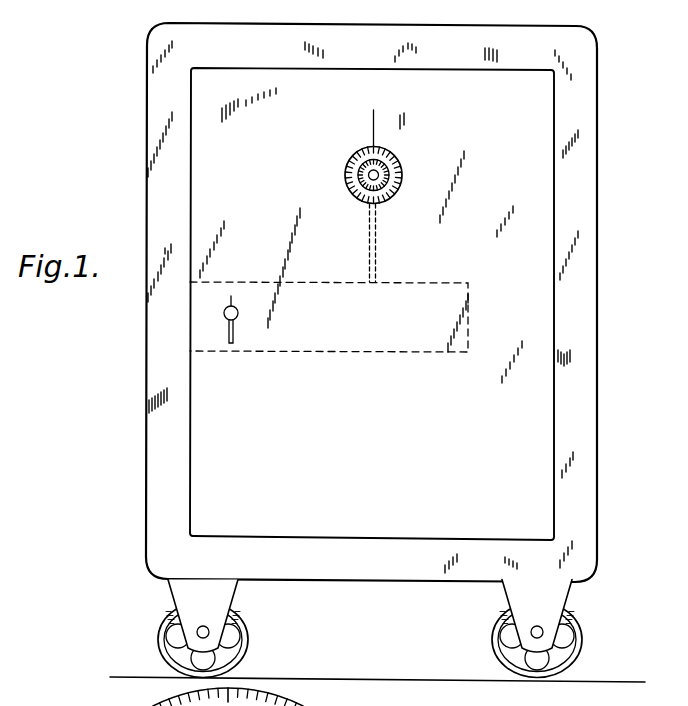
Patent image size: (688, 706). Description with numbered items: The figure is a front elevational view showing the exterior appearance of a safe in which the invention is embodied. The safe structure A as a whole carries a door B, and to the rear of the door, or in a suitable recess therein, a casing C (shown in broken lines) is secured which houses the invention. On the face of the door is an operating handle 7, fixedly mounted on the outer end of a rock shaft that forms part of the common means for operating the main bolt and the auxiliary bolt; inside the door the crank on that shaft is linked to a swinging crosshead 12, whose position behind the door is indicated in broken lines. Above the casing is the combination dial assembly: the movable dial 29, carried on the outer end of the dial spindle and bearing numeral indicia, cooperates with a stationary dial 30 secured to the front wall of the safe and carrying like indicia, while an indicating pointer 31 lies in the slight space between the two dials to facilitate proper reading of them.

The safe structure A is at (377, 38).
The door B is at (533, 333).
The casing C is at (415, 349).
The operating handle 7 is at (236, 332).
The swinging crosshead 12 is at (383, 214).
The movable dial 29 is at (368, 181).
The stationary dial 30 is at (390, 171).
The indicating pointer 31 is at (372, 157).